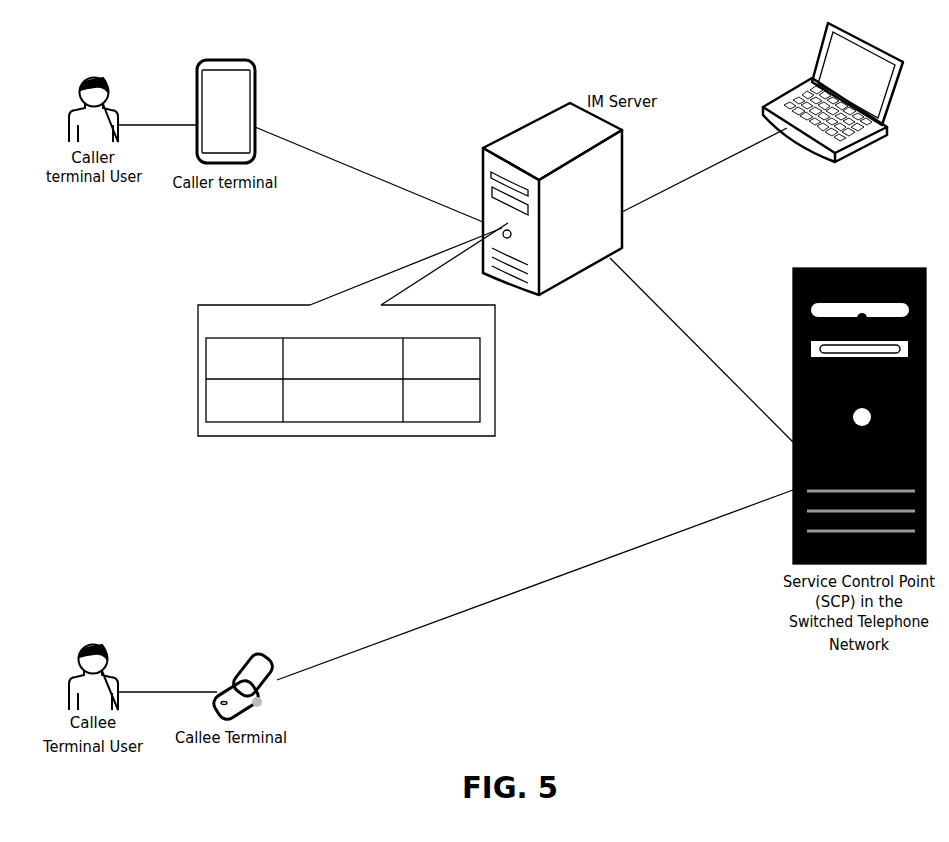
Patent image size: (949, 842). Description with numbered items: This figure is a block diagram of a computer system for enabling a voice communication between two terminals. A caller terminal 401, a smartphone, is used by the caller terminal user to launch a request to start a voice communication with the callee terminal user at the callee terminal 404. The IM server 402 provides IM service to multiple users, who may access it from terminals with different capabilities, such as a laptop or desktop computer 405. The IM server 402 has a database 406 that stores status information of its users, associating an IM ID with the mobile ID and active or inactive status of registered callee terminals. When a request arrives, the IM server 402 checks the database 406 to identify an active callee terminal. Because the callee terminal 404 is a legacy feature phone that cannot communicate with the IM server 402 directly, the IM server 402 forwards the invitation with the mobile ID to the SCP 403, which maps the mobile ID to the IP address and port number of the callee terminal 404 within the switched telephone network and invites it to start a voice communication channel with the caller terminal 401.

The caller terminal 401 is at (223, 60).
The IM server 402 is at (552, 113).
The SCP 403 is at (860, 268).
The callee terminal 404 is at (262, 658).
The laptop or desktop computer 405 is at (858, 72).
The database 406 is at (353, 329).